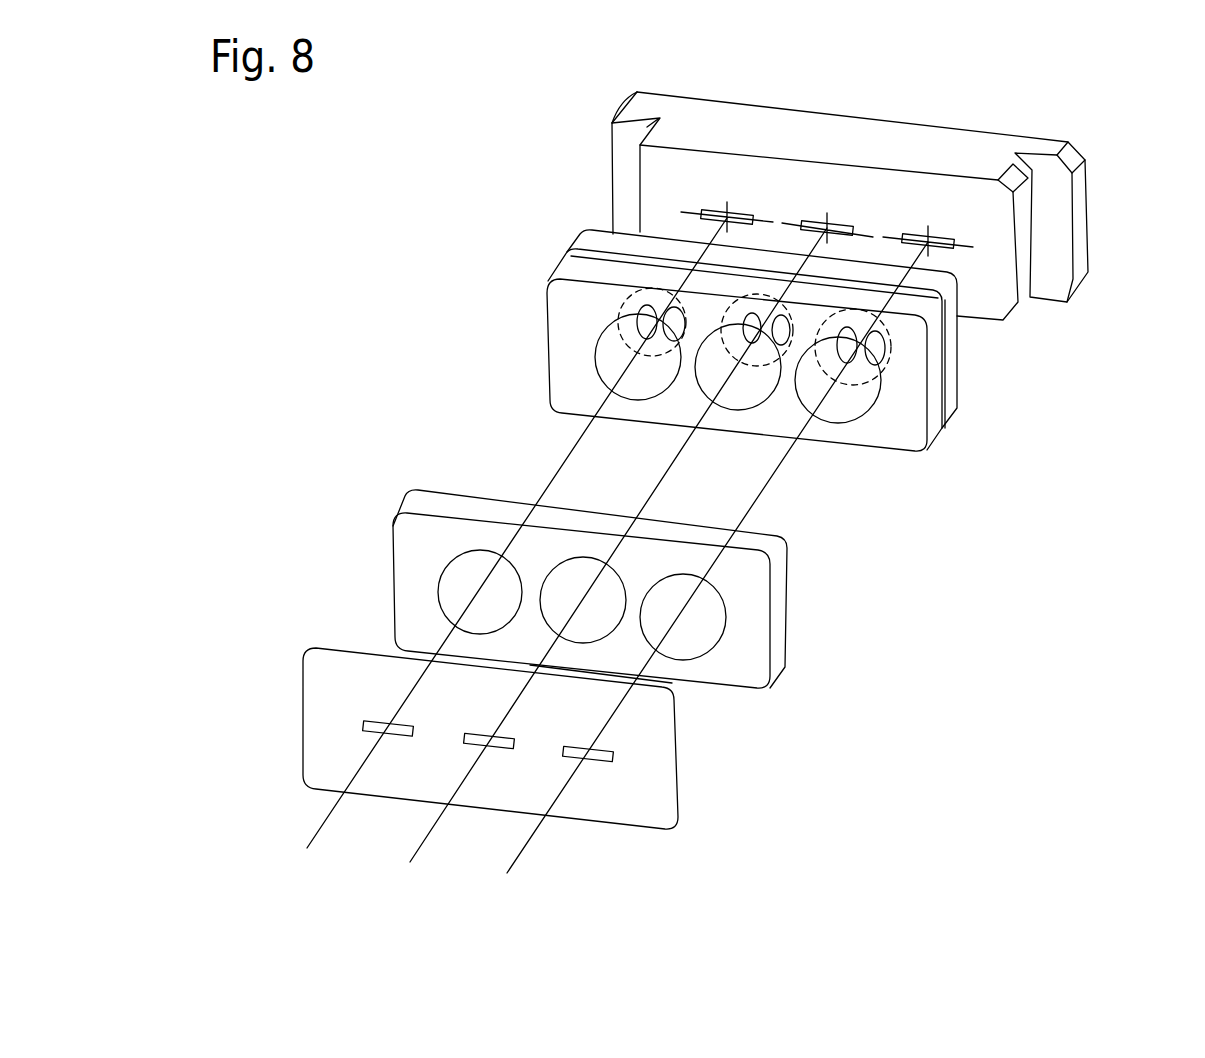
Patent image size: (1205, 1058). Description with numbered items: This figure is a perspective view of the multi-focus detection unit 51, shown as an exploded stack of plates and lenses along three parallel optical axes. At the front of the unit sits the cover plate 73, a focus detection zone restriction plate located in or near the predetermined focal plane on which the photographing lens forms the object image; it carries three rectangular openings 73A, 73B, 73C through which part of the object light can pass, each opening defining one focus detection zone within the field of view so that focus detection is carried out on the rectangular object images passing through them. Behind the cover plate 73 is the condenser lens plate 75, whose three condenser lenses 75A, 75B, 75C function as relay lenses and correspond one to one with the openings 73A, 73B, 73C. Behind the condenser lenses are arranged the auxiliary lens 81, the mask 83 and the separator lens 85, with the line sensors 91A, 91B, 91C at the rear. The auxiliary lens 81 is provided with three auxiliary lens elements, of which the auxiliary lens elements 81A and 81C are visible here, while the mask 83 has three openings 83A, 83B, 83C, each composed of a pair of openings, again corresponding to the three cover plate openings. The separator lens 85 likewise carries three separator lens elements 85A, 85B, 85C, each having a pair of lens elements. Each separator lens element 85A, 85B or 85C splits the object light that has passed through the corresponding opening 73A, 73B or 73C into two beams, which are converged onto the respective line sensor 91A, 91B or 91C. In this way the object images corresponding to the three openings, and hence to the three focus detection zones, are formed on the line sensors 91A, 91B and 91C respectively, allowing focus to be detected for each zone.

The multi-focus detection unit 51 is at (1103, 105).
The line sensor 91A is at (918, 232).
The line sensor 91B is at (813, 218).
The line sensor 91C is at (715, 208).
The separator lens 85 is at (580, 243).
The separator lens element 85A is at (893, 346).
The separator lens element 85B is at (752, 294).
The separator lens element 85C is at (628, 298).
The mask 83 is at (577, 258).
The mask opening 83A is at (880, 349).
The mask opening 83B is at (755, 316).
The mask opening 83C is at (636, 318).
The auxiliary lens 81 is at (560, 263).
The auxiliary lens element 81A is at (940, 402).
The auxiliary lens element 81C is at (605, 345).
The condenser lens plate 75 is at (760, 645).
The condenser lens 75A is at (457, 573).
The condenser lens 75B is at (576, 573).
The condenser lens 75C is at (673, 590).
The cover plate 73 is at (660, 792).
The rectangular opening 73A is at (365, 727).
The rectangular opening 73B is at (503, 748).
The rectangular opening 73C is at (601, 762).